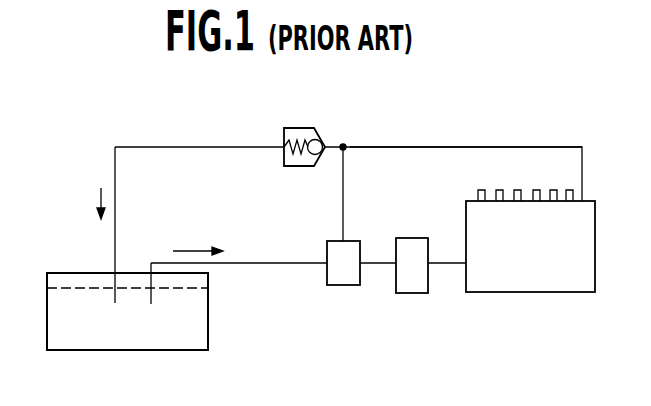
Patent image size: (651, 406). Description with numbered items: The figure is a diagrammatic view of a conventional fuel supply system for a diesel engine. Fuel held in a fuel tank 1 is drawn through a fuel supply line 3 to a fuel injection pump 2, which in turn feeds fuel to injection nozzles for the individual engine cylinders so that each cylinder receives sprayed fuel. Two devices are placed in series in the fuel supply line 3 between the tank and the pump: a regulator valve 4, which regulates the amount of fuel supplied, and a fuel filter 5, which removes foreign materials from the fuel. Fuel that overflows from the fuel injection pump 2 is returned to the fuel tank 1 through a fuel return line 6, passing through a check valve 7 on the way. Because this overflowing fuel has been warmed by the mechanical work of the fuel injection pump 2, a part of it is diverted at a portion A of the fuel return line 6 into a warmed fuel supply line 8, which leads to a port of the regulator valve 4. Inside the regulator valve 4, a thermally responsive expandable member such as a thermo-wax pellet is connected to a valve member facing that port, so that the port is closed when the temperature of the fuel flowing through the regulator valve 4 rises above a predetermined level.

The fuel tank 1 is at (160, 350).
The fuel injection pump 2 is at (530, 292).
The fuel supply line 3 is at (292, 265).
The regulator valve 4 is at (350, 285).
The fuel filter 5 is at (413, 293).
The fuel return line 6 is at (444, 147).
The check valve 7 is at (296, 127).
The warmed fuel supply line 8 is at (343, 200).
The portion A is at (343, 144).